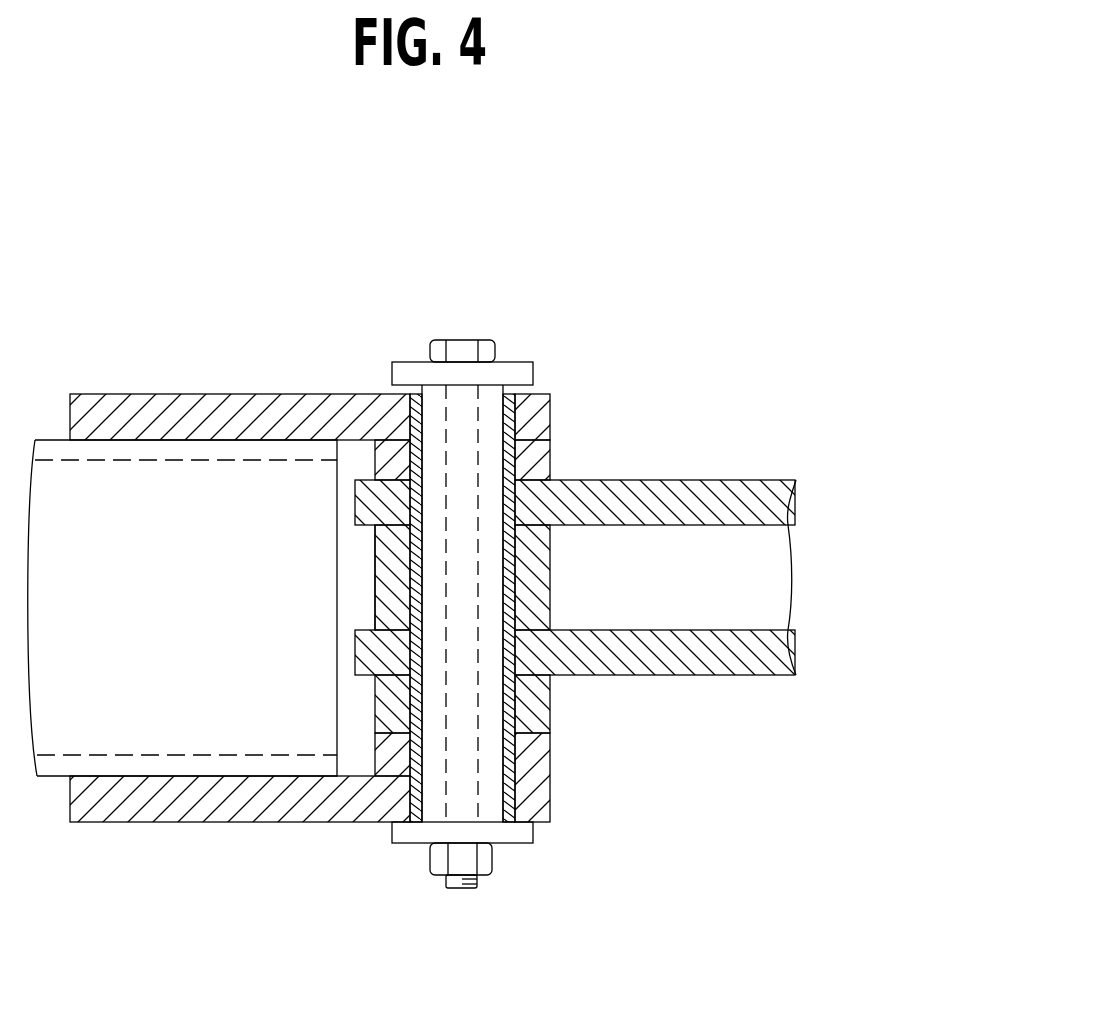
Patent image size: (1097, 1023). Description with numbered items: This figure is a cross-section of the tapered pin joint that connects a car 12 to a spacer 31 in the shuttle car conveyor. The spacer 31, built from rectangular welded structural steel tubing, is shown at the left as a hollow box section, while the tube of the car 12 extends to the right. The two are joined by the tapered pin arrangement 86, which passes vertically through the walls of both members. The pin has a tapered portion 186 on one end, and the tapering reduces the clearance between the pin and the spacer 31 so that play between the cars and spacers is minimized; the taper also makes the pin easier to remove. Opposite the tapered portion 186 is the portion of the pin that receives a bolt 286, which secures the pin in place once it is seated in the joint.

The tapered pin arrangement 86 is at (517, 363).
The spacer trolley 31 is at (233, 392).
The tapered portion 186 is at (518, 410).
The car 12 is at (652, 675).
The bolt 286 is at (485, 855).